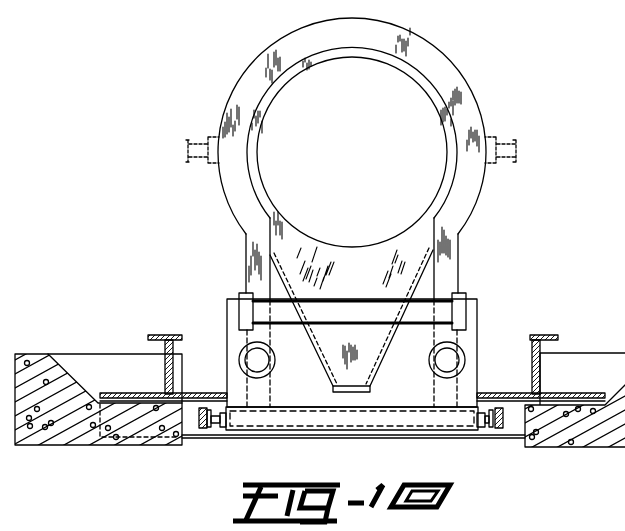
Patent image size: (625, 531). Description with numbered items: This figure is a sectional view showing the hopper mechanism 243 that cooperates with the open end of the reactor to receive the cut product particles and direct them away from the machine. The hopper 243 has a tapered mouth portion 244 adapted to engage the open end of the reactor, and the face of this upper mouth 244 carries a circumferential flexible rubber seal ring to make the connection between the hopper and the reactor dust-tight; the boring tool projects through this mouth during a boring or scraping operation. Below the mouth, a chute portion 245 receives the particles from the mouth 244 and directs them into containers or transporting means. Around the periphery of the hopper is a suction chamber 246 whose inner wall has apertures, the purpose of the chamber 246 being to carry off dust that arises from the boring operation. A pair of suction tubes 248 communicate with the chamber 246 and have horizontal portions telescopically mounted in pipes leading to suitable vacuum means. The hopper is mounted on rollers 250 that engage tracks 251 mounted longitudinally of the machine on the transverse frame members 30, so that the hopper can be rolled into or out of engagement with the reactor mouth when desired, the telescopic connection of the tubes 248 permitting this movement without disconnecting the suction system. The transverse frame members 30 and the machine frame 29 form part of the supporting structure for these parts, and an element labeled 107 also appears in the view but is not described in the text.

The machine frame 29 is at (45, 446).
The transverse frame members 30 is at (517, 438).
The angle bracket 107 is at (556, 338).
The hopper mechanism 243 is at (223, 192).
The tapered mouth portion 244 is at (373, 48).
The chute portion 245 is at (366, 376).
The suction chamber 246 is at (241, 77).
The suction tubes 248 is at (241, 358).
The rollers 250 is at (211, 430).
The tracks 251 is at (207, 431).